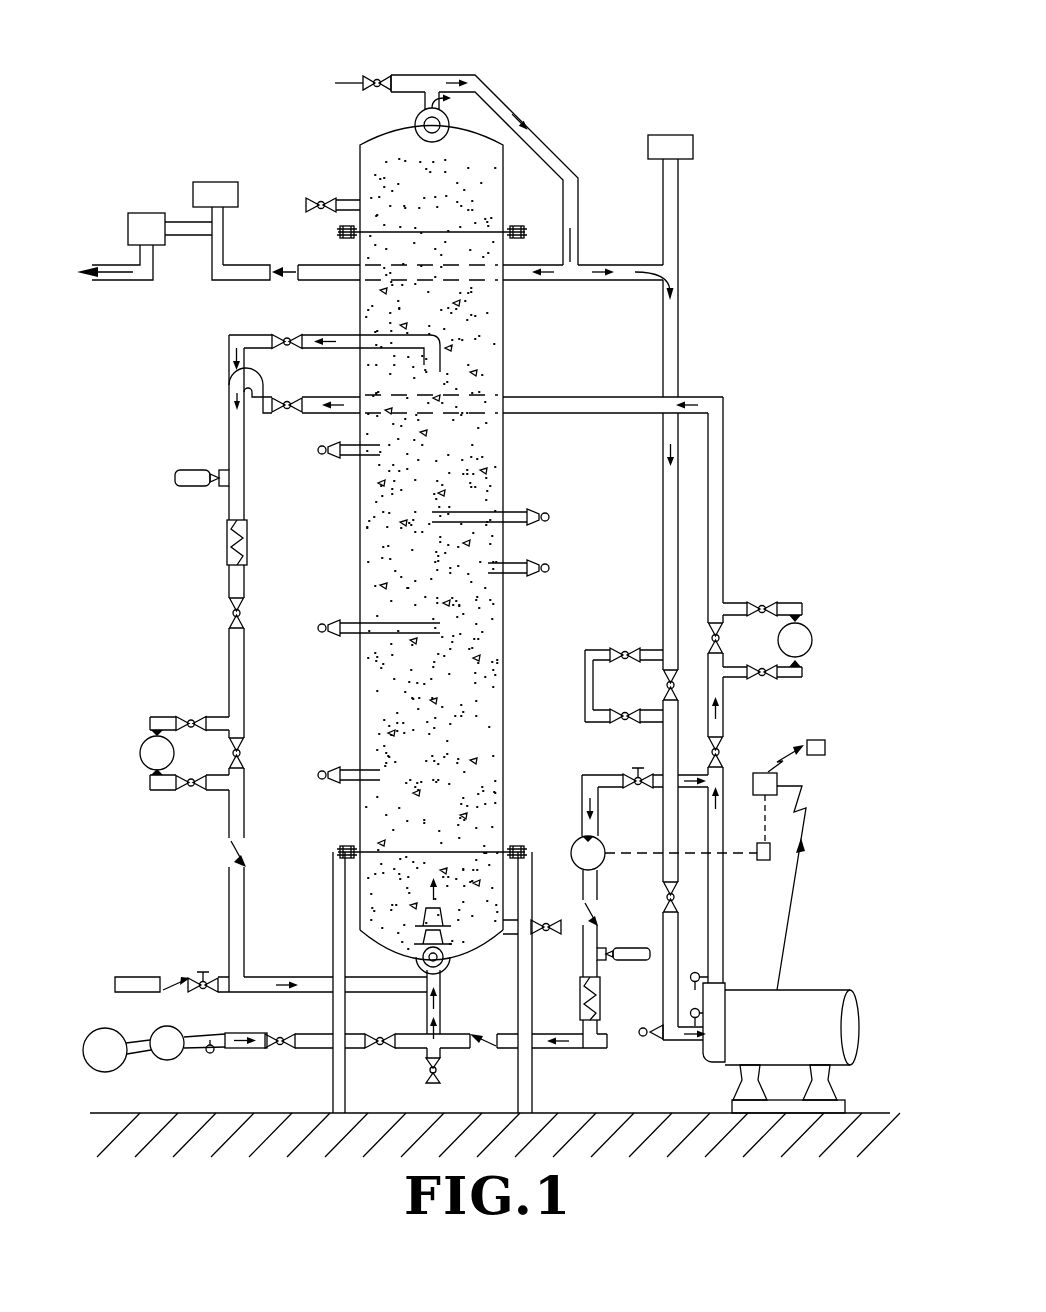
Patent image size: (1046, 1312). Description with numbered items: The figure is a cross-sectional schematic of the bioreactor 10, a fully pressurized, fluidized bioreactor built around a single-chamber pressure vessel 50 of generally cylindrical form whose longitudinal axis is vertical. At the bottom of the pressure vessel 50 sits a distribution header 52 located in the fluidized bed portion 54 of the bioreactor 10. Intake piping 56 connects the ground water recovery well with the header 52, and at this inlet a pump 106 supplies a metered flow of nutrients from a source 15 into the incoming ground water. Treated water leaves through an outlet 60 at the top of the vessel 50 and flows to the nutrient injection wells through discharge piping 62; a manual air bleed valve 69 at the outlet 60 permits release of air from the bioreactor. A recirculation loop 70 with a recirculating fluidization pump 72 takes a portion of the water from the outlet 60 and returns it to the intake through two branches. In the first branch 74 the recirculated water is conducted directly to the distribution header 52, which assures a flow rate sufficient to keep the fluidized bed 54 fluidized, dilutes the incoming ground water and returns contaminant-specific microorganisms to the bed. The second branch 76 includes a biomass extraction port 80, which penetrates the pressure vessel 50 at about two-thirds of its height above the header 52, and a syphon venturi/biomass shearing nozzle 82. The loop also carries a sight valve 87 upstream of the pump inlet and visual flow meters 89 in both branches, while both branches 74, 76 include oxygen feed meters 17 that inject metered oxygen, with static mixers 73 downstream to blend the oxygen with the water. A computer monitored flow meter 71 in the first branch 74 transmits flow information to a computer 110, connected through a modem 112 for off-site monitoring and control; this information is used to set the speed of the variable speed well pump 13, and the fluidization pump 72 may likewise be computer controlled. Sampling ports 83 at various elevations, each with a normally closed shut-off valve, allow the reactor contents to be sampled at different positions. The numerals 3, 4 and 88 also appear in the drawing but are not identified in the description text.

The bioreactor 10 is at (556, 131).
The pump 3 is at (446, 963).
The drain valve 4 is at (517, 922).
The well pump 13 is at (822, 738).
The source 15 is at (105, 1060).
The oxygen feed meters 17 is at (190, 486).
The pressure vessel 50 is at (506, 627).
The distribution header 52 is at (368, 938).
The fluidized bed portion 54 is at (463, 830).
The intake piping 56 is at (135, 975).
The outlet 60 is at (418, 100).
The discharge piping 62 is at (238, 268).
The manual air bleed valve 69 is at (372, 82).
The recirculation loop 70 is at (680, 361).
The computer monitored flow meter 71 is at (632, 841).
The recirculating fluidization pump 72 is at (797, 990).
The static mixers 73 is at (226, 540).
The first branch 74 is at (576, 1055).
The second branch 76 is at (229, 677).
The biomass extraction port 80 is at (322, 333).
The syphon venturi/biomass shearing nozzle 82 is at (232, 386).
The sampling ports 83 is at (330, 458).
The sight valve 87 is at (586, 690).
The condenser unit 88 is at (143, 230).
The visual flow meters 89 is at (142, 762).
The pump 106 is at (170, 1056).
The computer 110 is at (779, 786).
The modem 112 is at (772, 858).